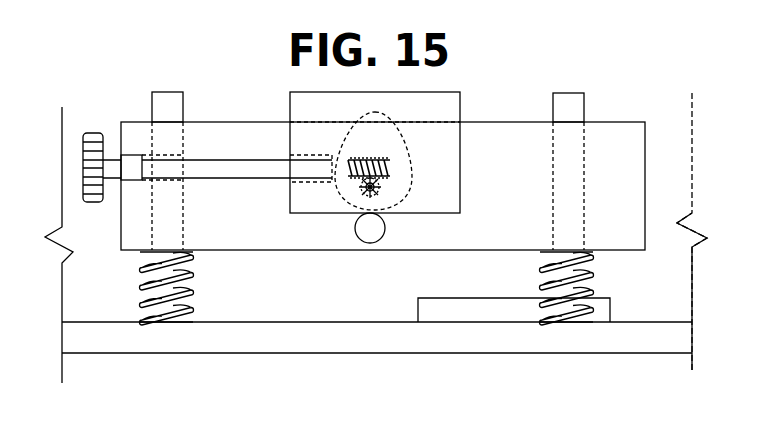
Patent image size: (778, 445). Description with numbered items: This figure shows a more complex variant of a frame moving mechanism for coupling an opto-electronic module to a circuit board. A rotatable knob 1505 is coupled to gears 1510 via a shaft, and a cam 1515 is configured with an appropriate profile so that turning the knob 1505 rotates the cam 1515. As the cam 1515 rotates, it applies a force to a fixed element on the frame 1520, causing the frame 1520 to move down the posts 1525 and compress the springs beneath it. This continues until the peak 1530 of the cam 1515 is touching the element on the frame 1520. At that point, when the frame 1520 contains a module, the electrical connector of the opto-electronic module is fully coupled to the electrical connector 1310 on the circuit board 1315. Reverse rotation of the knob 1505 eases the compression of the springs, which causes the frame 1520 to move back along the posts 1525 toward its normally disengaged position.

The rotatable knob 1505 is at (93, 130).
The gears 1510 is at (395, 165).
The cam 1515 is at (350, 192).
The frame 1520 is at (372, 233).
The posts 1525 is at (168, 102).
The peak of the cam 1530 is at (372, 110).
The electrical connector 1310 is at (465, 313).
The circuit board 1315 is at (525, 337).